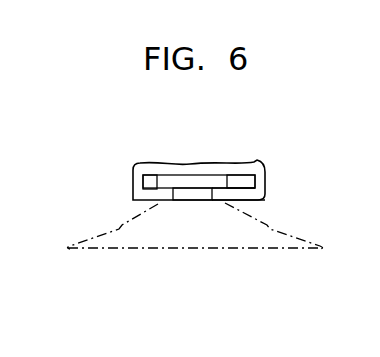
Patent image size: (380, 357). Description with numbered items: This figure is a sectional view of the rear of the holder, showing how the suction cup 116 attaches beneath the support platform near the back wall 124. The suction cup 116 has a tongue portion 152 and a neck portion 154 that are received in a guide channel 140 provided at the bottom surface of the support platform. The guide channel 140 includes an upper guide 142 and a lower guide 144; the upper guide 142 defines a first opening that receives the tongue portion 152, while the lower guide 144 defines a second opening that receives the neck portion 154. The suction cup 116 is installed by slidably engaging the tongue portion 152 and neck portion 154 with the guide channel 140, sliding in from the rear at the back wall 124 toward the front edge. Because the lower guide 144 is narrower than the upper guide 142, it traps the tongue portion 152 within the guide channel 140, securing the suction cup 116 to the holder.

The suction cup 116 is at (242, 238).
The back wall 124 is at (188, 165).
The guide channel 140 is at (165, 183).
The upper guide 142 is at (143, 186).
The lower guide 144 is at (228, 194).
The tongue portion 152 is at (196, 182).
The neck portion 154 is at (187, 191).